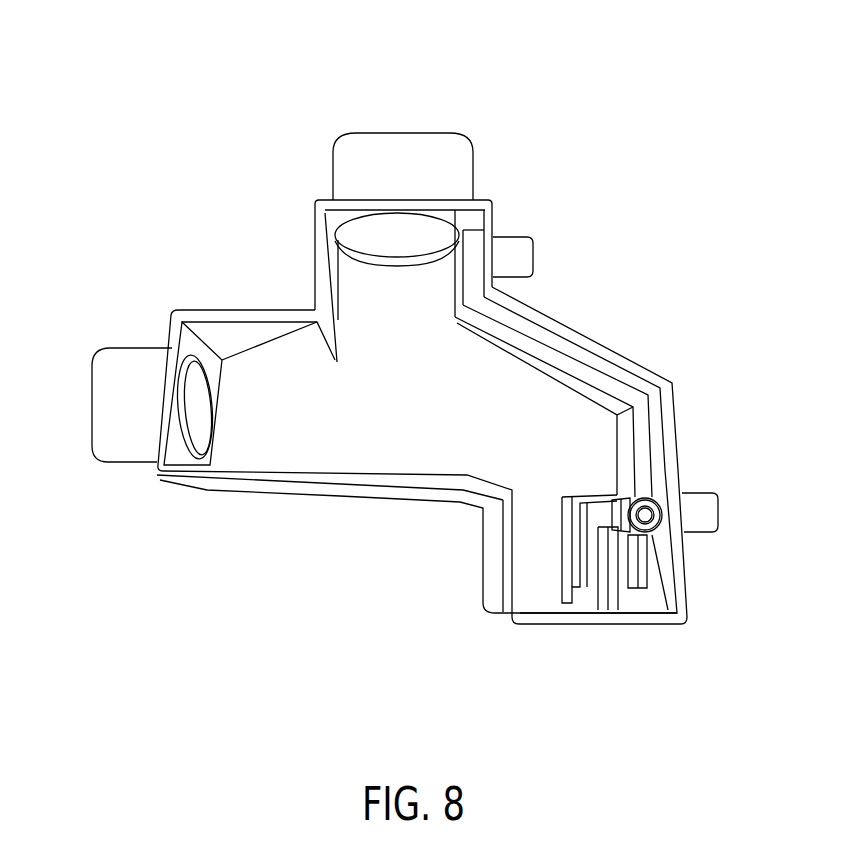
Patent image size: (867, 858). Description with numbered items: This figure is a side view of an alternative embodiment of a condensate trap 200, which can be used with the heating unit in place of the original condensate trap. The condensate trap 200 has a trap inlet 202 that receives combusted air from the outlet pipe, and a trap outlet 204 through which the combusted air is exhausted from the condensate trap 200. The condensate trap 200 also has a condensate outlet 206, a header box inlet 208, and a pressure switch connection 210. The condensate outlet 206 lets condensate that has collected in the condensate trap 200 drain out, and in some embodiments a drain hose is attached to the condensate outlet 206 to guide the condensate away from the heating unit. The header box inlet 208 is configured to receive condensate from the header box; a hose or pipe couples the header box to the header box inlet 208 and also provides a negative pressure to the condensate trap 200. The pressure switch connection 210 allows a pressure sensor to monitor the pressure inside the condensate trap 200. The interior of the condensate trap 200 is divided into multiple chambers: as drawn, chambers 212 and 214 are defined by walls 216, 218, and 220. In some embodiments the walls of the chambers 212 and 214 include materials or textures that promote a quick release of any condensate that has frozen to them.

The condensate trap 200 is at (150, 100).
The trap inlet 202 is at (465, 143).
The trap outlet 204 is at (100, 457).
The condensate outlet 206 is at (722, 532).
The header box inlet 208 is at (525, 236).
The pressure switch connection 210 is at (650, 494).
The chamber 212 is at (297, 463).
The chamber 214 is at (633, 600).
The wall 216 is at (573, 528).
The wall 218 is at (617, 595).
The wall 220 is at (647, 575).